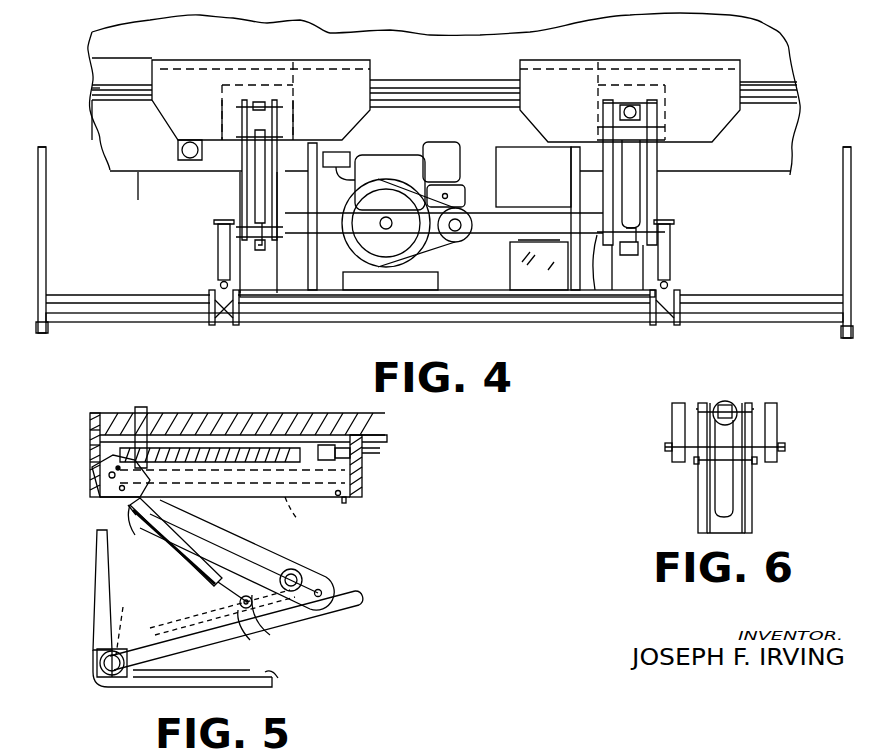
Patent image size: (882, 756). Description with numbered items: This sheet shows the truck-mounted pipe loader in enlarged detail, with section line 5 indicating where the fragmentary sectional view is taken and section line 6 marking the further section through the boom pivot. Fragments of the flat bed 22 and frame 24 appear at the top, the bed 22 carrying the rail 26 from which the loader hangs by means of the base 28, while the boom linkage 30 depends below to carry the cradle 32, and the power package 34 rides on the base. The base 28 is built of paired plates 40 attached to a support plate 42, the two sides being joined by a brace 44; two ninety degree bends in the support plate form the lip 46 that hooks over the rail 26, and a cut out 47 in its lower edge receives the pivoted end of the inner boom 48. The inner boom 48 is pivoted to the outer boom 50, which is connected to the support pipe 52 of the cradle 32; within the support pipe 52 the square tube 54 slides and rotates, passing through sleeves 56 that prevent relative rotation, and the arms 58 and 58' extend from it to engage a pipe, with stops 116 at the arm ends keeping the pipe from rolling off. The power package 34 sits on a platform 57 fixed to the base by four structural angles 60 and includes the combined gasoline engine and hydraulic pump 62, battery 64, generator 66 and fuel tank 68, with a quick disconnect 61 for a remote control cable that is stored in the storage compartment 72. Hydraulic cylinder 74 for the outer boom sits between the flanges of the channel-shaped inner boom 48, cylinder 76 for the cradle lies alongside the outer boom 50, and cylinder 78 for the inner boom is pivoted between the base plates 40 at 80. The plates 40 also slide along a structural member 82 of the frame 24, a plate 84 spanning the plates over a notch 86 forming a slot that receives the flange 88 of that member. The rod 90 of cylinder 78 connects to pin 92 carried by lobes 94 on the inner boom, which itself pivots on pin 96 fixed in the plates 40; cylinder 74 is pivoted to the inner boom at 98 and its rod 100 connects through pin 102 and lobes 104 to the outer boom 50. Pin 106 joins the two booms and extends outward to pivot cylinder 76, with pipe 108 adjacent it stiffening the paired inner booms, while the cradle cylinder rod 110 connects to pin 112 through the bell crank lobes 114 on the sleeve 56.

In FIG. 4, the section line 5— 5 is at (266, 6).
In FIG. 5, the section line 6— 6 is at (120, 445).
In FIG. 4, the flat bed 22 is at (562, 28).
In FIG. 5, the flat bed 22 is at (106, 412).
In FIG. 4, the frame 24 is at (112, 178).
In FIG. 5, the frame 24 is at (366, 489).
In FIG. 4, the rail 26 is at (392, 60).
In FIG. 5, the rail 26 is at (90, 432).
In FIG. 4, the base 28 is at (768, 80).
In FIG. 5, the base 28 is at (253, 506).
In FIG. 4, the boom linkage 30 is at (200, 197).
In FIG. 5, the boom linkage 30 is at (343, 598).
In FIG. 4, the cradle 32 is at (37, 138).
In FIG. 5, the cradle 32 is at (88, 632).
In FIG. 4, the power package 34 is at (397, 130).
In FIG. 4, the plates 40 is at (298, 52).
In FIG. 5, the plates 40 is at (170, 432).
In FIG. 6, the plates 40 is at (675, 418).
In FIG. 4, the support plate 42 is at (152, 88).
In FIG. 5, the support plate 42 is at (90, 445).
In FIG. 4, the brace 44 is at (487, 85).
In FIG. 5, the brace 44 is at (265, 440).
In FIG. 4, the lip 46 is at (158, 57).
In FIG. 5, the lip 46 is at (92, 416).
In FIG. 4, the cut out 47 is at (222, 100).
In FIG. 5, the cut out 47 is at (90, 462).
In FIG. 4, the inner boom 48 is at (242, 193).
In FIG. 5, the inner boom 48 is at (228, 532).
In FIG. 6, the inner boom 48 is at (712, 520).
In FIG. 4, the outer boom 50 is at (275, 300).
In FIG. 5, the outer boom 50 is at (240, 640).
In FIG. 4, the support pipe 52 is at (470, 323).
In FIG. 5, the support pipe 52 is at (98, 660).
In FIG. 4, the square tube 54 is at (120, 308).
In FIG. 4, the sleeves 56 is at (226, 326).
In FIG. 4, the platform 57 is at (448, 288).
In FIG. 4, the arms 58 is at (444, 157).
In FIG. 5, the arms 58 is at (84, 590).
In FIG. 4, the arm 58' is at (433, 344).
In FIG. 5, the arm 58' is at (182, 678).
In FIG. 4, the structural angles 60 is at (308, 190).
In FIG. 4, the quick disconnect 61 is at (178, 155).
In FIG. 4, the gasoline engine and hydraulic pump 62 is at (376, 160).
In FIG. 4, the battery 64 is at (510, 268).
In FIG. 4, the generator 66 is at (466, 194).
In FIG. 4, the fuel tank 68 is at (443, 148).
In FIG. 4, the storage compartment 72 is at (510, 158).
In FIG. 4, the outer boom cylinder 74 is at (256, 156).
In FIG. 5, the outer boom cylinder 74 is at (214, 582).
In FIG. 6, the outer boom cylinder 74 is at (733, 500).
In FIG. 4, the cradle cylinder 76 is at (220, 260).
In FIG. 5, the cradle cylinder 76 is at (165, 678).
In FIG. 4, the inner boom cylinder 78 is at (250, 118).
In FIG. 5, the inner boom cylinder 78 is at (304, 514).
In FIG. 6, the inner boom cylinder 78 is at (735, 432).
In FIG. 5, the pivot connection 80 is at (344, 503).
In FIG. 4, the structural member 82 is at (138, 178).
In FIG. 5, the structural member 82 is at (364, 472).
In FIG. 4, the plate 84 is at (150, 90).
In FIG. 5, the plate 84 is at (350, 446).
In FIG. 5, the notch 86 is at (320, 456).
In FIG. 4, the flange 88 is at (93, 103).
In FIG. 5, the flange 88 is at (365, 435).
In FIG. 5, the rod 90 is at (140, 440).
In FIG. 6, the rod 90 is at (730, 402).
In FIG. 5, the pin 92 is at (108, 466).
In FIG. 6, the pin 92 is at (712, 402).
In FIG. 5, the lobes 94 is at (158, 540).
In FIG. 6, the lobes 94 is at (703, 403).
In FIG. 5, the pin 96 is at (108, 478).
In FIG. 6, the pin 96 is at (665, 447).
In FIG. 5, the pivot connection 98 is at (130, 514).
In FIG. 6, the pivot connection 98 is at (762, 466).
In FIG. 5, the rod 100 is at (256, 605).
In FIG. 5, the pin 102 is at (250, 640).
In FIG. 5, the lobes 104 is at (270, 635).
In FIG. 4, the pin 106 is at (216, 230).
In FIG. 5, the pin 106 is at (322, 592).
In FIG. 4, the pipe 108 is at (595, 297).
In FIG. 5, the pipe 108 is at (300, 575).
In FIG. 4, the cylinder rod 110 is at (220, 284).
In FIG. 5, the cylinder rod 110 is at (158, 625).
In FIG. 5, the pin 112 is at (128, 625).
In FIG. 4, the lobes 114 is at (218, 325).
In FIG. 5, the lobes 114 is at (125, 680).
In FIG. 5, the stops 116 is at (278, 678).